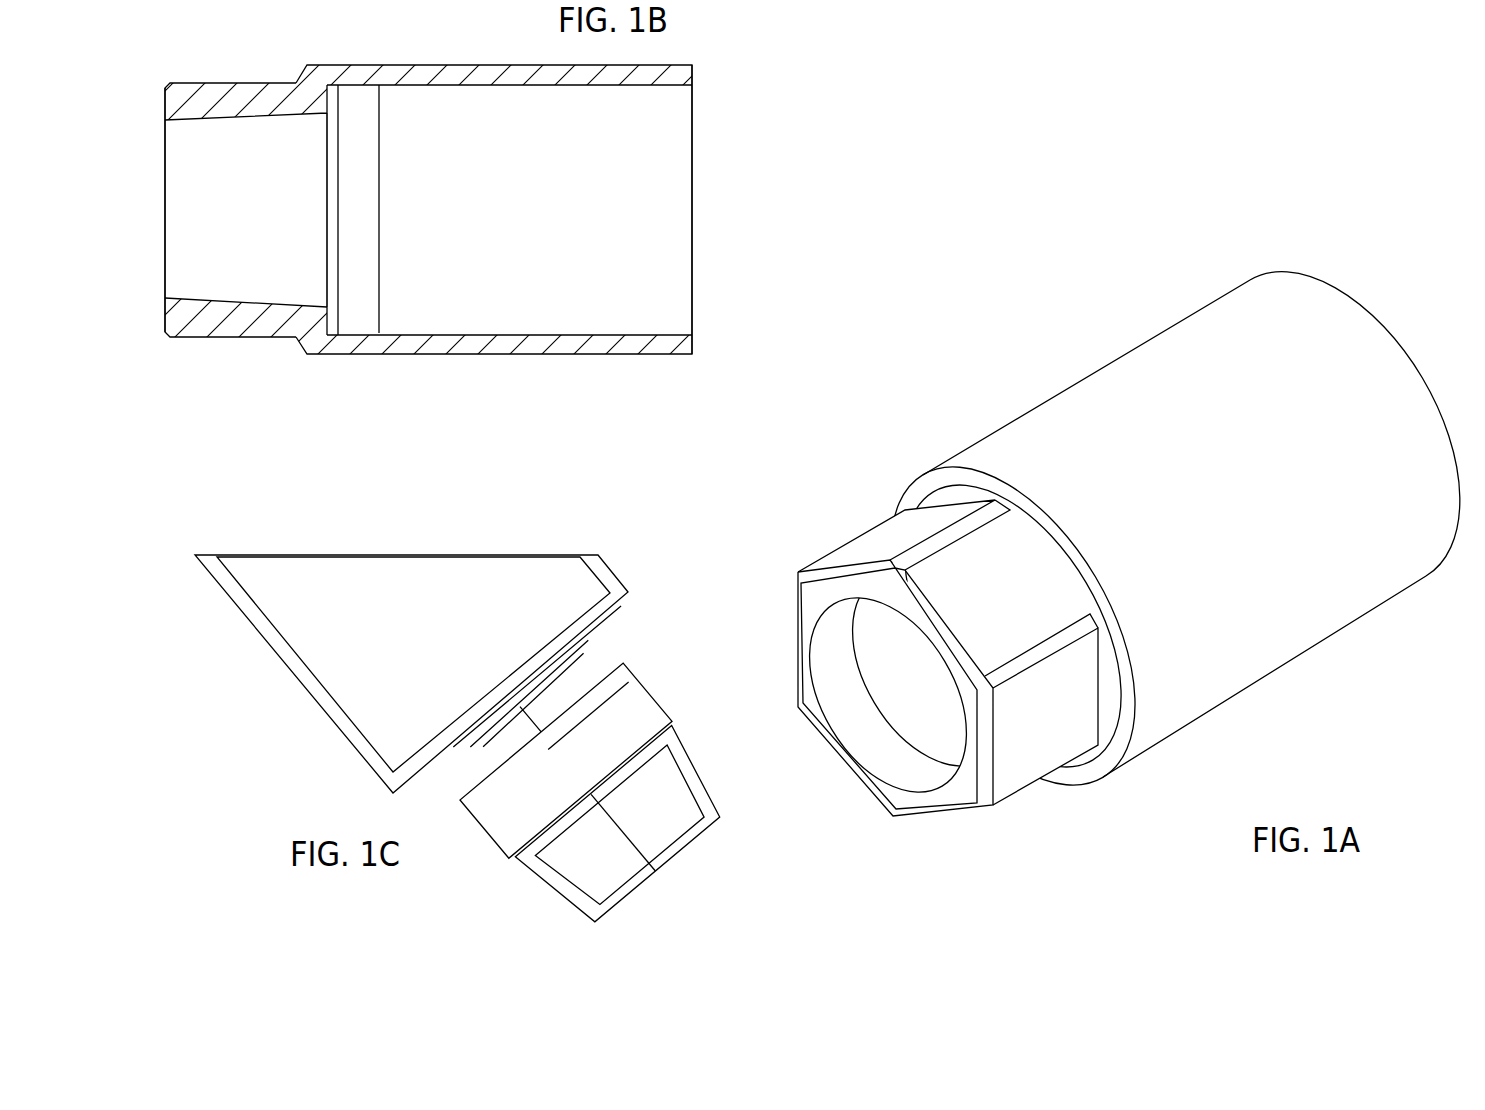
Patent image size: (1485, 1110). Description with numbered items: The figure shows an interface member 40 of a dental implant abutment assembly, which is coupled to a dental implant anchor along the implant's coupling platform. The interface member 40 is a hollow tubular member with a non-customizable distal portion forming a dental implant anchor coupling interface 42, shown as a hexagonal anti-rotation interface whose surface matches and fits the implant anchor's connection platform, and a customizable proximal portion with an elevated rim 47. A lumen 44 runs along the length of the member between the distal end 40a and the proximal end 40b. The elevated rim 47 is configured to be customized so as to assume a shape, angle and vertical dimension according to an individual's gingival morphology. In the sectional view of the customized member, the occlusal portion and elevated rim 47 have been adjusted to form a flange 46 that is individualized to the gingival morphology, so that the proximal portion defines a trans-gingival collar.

In FIG. 1B, the interface member 40 is at (488, 262).
In FIG. 1A, the interface member 40 is at (1081, 516).
In FIG. 1C, the interface member 40 is at (750, 675).
In FIG. 1B, the distal end 40a is at (152, 208).
In FIG. 1A, the distal end 40a is at (750, 675).
In FIG. 1B, the proximal end 40b is at (708, 233).
In FIG. 1A, the proximal end 40b is at (1391, 270).
In FIG. 1B, the dental implant anchor coupling interface 42 is at (272, 345).
In FIG. 1A, the dental implant anchor coupling interface 42 is at (894, 672).
In FIG. 1B, the lumen 44 is at (458, 258).
In FIG. 1C, the flange 46 is at (533, 555).
In FIG. 1B, the elevated rim 47 is at (545, 362).
In FIG. 1A, the elevated rim 47 is at (1157, 507).